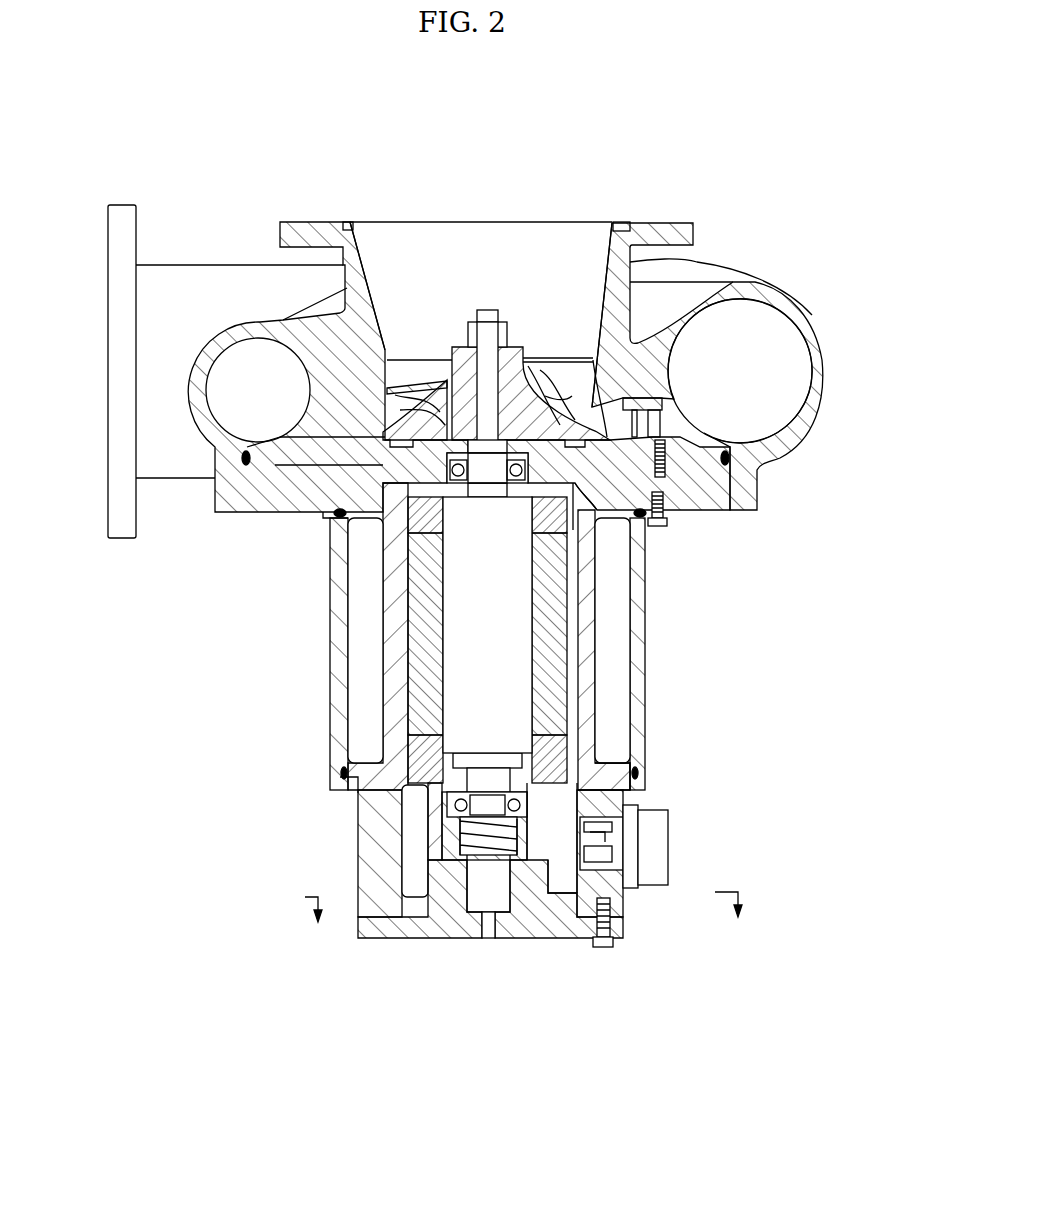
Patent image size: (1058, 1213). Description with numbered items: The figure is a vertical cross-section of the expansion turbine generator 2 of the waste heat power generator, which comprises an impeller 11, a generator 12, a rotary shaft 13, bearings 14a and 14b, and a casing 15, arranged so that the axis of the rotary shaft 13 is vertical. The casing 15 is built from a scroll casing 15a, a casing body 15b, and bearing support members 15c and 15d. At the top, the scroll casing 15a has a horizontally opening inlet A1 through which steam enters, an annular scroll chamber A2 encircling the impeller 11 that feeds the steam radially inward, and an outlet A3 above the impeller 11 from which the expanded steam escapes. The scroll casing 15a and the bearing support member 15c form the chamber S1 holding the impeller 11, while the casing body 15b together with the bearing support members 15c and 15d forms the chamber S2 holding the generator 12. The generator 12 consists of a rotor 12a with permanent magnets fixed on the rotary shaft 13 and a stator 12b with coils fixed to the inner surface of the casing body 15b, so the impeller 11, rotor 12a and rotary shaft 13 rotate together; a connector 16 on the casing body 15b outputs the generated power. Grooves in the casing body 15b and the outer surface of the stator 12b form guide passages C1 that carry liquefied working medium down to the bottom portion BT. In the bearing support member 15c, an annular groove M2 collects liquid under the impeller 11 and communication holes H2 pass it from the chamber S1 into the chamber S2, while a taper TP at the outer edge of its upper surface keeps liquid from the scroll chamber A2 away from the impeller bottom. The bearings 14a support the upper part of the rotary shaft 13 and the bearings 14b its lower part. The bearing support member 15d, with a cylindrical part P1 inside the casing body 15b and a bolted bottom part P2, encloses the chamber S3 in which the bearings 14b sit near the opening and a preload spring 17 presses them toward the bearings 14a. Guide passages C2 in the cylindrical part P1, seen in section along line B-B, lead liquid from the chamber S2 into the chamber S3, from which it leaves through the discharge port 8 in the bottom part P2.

The expansion turbine generator 2 is at (668, 190).
The inlet A1 is at (103, 212).
The outlet A3 is at (468, 222).
The chamber S1 is at (566, 394).
The scroll casing 15a is at (741, 263).
The scroll chamber A2 is at (770, 330).
The groove M2 is at (402, 420).
The rotary shaft 13 is at (459, 440).
The impeller 11 is at (513, 360).
The taper TP is at (291, 432).
The bearings 14a is at (455, 471).
The bearing support member 15c is at (676, 468).
The communication hole H2 is at (591, 521).
The generator 12 is at (728, 628).
The rotor 12a is at (511, 636).
The stator 12b is at (554, 677).
The guide passage C1 is at (574, 728).
The casing 15 is at (330, 722).
The casing body 15b is at (608, 776).
The bearings 14b is at (462, 801).
The preload spring 17 is at (481, 828).
The cylindrical part P1 is at (438, 853).
The line B- B is at (523, 906).
The chamber S2 is at (571, 838).
The connector 16 is at (655, 889).
The bearing support member 15d is at (446, 918).
The discharge port 8 is at (485, 932).
The chamber S3 is at (487, 882).
The guide passage C2 is at (529, 894).
The bottom part P2 is at (565, 926).
The bottom portion BT is at (388, 945).